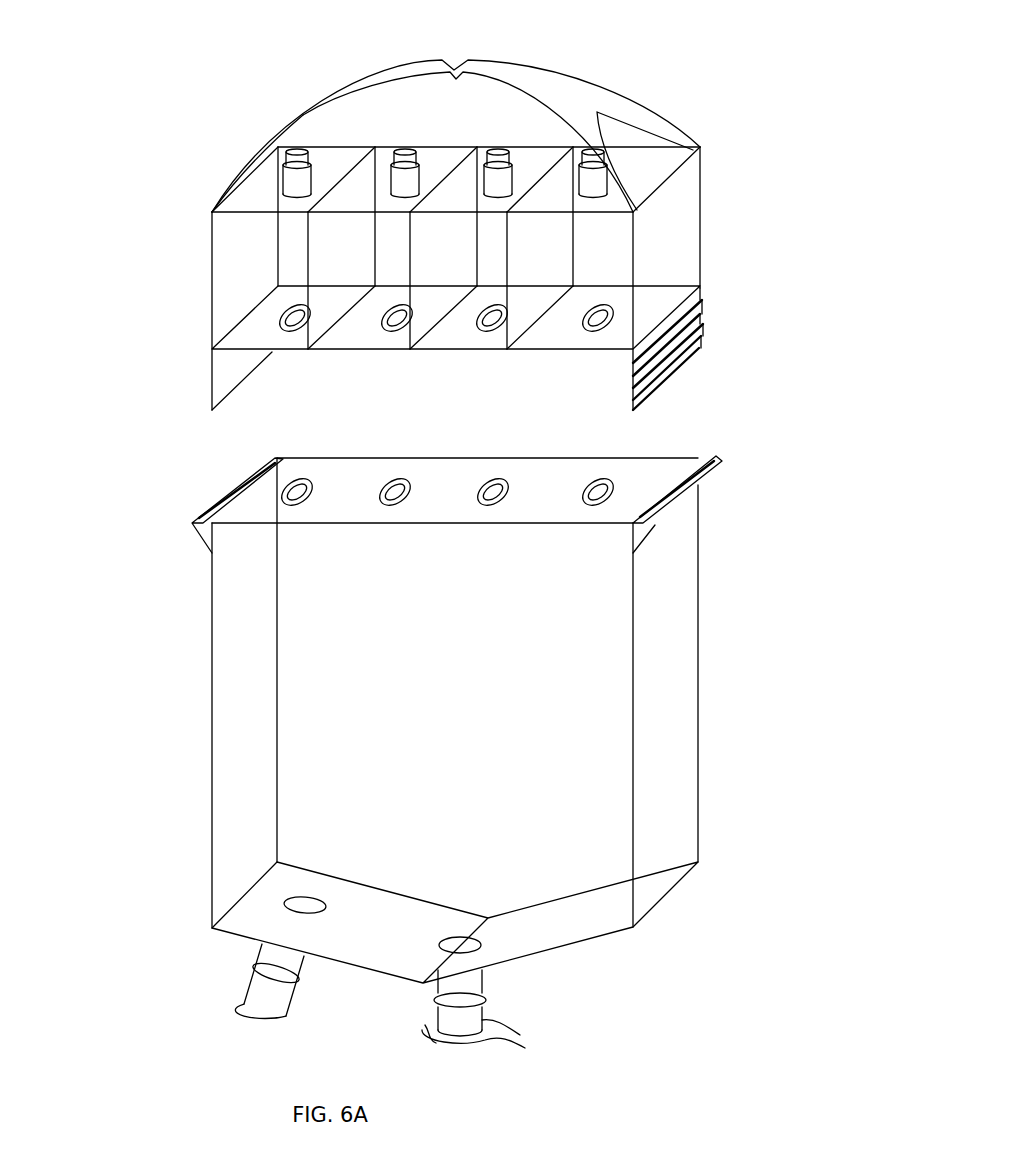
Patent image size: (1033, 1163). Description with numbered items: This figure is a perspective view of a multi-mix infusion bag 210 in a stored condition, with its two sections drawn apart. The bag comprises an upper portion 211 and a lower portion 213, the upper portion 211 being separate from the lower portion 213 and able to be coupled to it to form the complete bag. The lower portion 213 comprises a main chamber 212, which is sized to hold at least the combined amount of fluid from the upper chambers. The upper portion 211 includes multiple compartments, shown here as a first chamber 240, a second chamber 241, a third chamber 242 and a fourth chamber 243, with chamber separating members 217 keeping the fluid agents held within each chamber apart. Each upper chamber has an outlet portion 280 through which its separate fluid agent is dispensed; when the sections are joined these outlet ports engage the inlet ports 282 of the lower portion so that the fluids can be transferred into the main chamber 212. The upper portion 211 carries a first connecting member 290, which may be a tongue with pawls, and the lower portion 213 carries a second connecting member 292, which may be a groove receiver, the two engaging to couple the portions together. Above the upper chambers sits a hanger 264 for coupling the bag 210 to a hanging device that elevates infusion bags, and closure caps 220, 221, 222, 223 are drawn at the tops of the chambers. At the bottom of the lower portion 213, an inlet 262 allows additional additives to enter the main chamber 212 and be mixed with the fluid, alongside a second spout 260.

The multi-mix infusion bag 210 is at (760, 63).
The upper portion 211 is at (175, 209).
The main chamber 212 is at (557, 677).
The lower portion 213 is at (178, 706).
The chamber separating members 217 is at (540, 248).
The first port cap 220 is at (297, 157).
The second port cap 221 is at (403, 157).
The third port cap 222 is at (496, 157).
The fourth port cap 223 is at (590, 156).
The first chamber 240 is at (257, 269).
The second chamber 241 is at (361, 308).
The third chamber 242 is at (471, 308).
The fourth chamber 243 is at (566, 308).
The outlet spout 260 is at (473, 985).
The inlet 262 is at (262, 993).
The hanger 264 is at (465, 60).
The outlet portion 280 is at (595, 315).
The inlet ports 282 is at (600, 488).
The first connecting member 290 is at (663, 352).
The second connecting member 292 is at (718, 462).